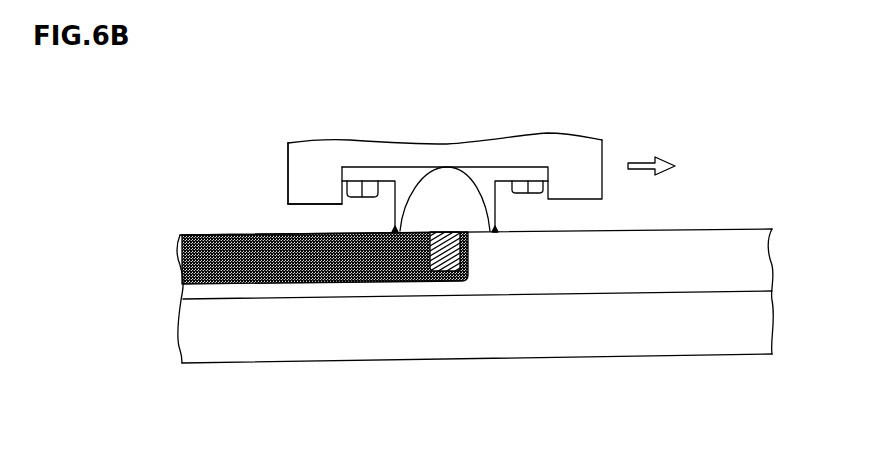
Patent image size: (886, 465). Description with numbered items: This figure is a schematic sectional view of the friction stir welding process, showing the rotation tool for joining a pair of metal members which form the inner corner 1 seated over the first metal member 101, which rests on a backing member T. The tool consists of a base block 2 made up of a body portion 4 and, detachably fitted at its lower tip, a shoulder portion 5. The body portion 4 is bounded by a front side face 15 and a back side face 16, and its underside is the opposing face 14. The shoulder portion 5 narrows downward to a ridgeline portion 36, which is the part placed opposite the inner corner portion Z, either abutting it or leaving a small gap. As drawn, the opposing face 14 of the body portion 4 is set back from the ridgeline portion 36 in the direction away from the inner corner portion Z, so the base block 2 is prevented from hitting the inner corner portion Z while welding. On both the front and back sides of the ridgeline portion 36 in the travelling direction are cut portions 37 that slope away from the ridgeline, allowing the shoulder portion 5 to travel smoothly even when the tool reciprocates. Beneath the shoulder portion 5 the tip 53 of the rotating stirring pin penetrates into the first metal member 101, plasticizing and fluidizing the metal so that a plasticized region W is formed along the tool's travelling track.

The rotation tool for joining a pair of metal members which form the inner corner 1 is at (540, 124).
The base block 2 is at (278, 166).
The body portion 4 is at (318, 179).
The shoulder portion 5 is at (385, 183).
The opposing face 14 is at (298, 204).
The front side face 15 is at (603, 150).
The back side face 16 is at (288, 154).
The ridgeline portion 36 is at (479, 233).
The cut portion 37 is at (390, 232).
The tip 53 is at (443, 268).
The first metal member 101 is at (737, 229).
The plasticized region W is at (203, 253).
The inner corner portion Z is at (678, 229).
The backing member T is at (315, 362).